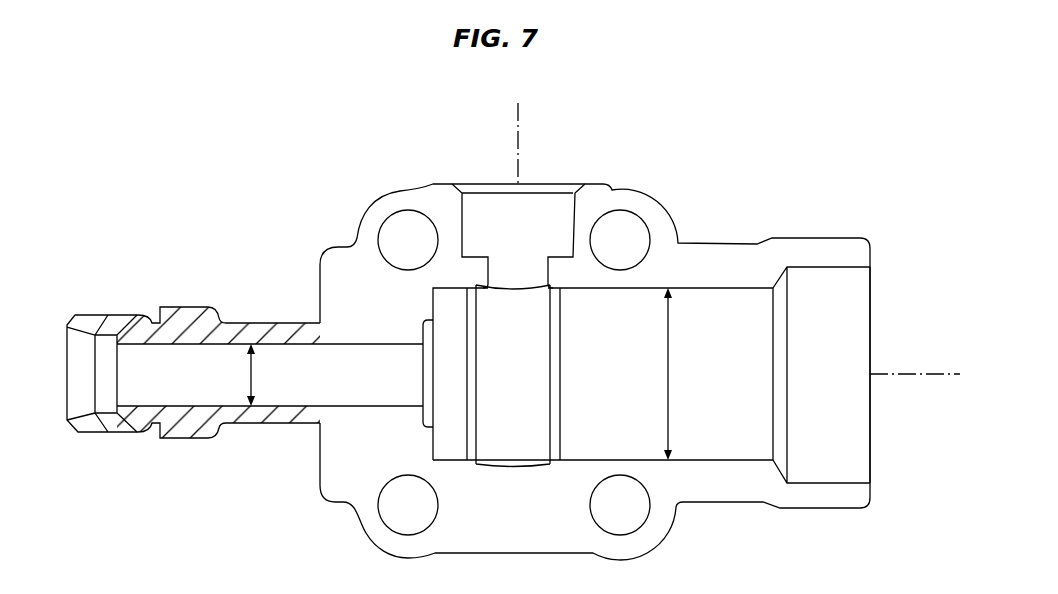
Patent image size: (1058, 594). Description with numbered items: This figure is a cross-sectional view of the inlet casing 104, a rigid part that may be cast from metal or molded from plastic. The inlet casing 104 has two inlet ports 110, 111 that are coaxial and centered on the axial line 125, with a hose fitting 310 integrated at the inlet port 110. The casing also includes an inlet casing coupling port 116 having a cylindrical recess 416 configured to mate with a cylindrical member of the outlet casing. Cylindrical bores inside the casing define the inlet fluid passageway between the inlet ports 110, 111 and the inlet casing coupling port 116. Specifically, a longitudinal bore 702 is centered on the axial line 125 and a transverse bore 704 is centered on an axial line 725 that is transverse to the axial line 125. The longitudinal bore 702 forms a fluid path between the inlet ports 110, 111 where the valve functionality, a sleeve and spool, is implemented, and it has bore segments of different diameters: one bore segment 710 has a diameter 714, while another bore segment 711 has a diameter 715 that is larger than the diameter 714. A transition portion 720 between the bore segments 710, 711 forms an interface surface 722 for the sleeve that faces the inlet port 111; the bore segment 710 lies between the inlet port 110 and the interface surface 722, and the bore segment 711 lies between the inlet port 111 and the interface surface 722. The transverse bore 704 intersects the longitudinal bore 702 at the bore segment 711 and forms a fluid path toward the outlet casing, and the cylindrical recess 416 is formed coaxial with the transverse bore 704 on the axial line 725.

The inlet casing 104 is at (162, 134).
The hose fitting 310 is at (102, 313).
The inlet port 110 is at (192, 310).
The inlet casing coupling port 116 is at (427, 185).
The cylindrical recess 416 is at (592, 200).
The transverse bore 704 is at (503, 219).
The axial line 725 is at (520, 133).
The interface surface 722 is at (435, 311).
The bore segment 710 is at (286, 413).
The diameter 714 is at (250, 370).
The diameter 715 is at (668, 376).
The transition portion 720 is at (423, 438).
The bore segment 711 is at (704, 462).
The inlet port 111 is at (808, 500).
The longitudinal bore 702 is at (821, 381).
The axial line 125 is at (919, 371).